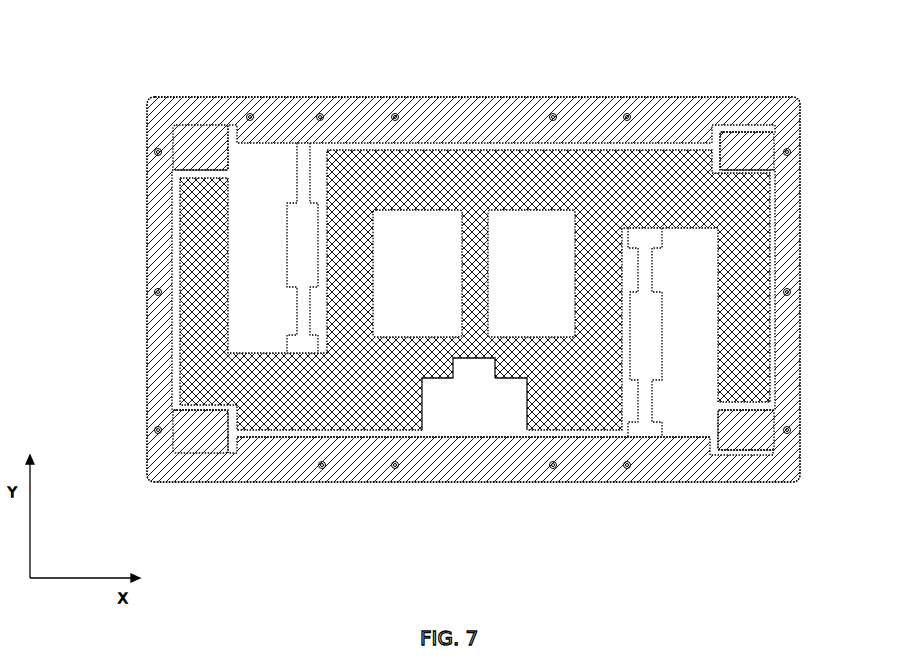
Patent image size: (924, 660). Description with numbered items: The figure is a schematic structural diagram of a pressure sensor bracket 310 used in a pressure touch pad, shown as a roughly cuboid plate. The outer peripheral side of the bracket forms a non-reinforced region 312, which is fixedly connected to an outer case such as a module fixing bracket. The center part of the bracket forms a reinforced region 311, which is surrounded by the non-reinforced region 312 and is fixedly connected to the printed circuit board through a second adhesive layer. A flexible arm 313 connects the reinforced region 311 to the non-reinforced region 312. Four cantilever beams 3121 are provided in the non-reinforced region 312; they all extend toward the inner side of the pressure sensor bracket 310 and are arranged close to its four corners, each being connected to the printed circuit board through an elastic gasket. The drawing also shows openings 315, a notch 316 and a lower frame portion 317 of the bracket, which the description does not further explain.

The pressure sensor bracket 310 is at (789, 273).
The reinforced region 311 is at (443, 188).
The non-reinforced region 312 is at (252, 110).
The cantilever beam 3121 is at (203, 143).
The flexible arm 313 is at (302, 168).
The opening 315 is at (530, 242).
The notch 316 is at (500, 395).
The bottom frame bar 317 is at (317, 470).